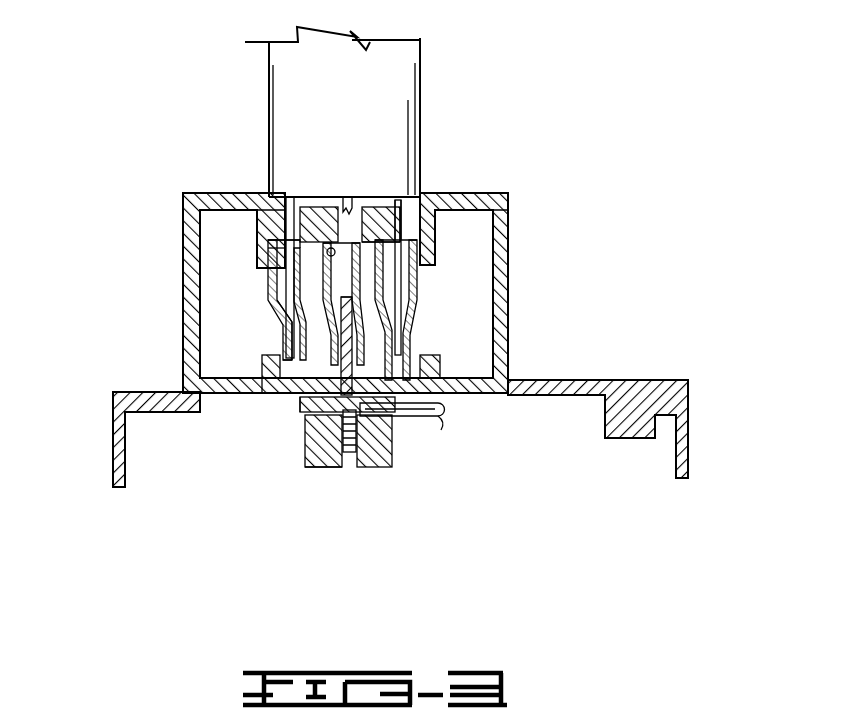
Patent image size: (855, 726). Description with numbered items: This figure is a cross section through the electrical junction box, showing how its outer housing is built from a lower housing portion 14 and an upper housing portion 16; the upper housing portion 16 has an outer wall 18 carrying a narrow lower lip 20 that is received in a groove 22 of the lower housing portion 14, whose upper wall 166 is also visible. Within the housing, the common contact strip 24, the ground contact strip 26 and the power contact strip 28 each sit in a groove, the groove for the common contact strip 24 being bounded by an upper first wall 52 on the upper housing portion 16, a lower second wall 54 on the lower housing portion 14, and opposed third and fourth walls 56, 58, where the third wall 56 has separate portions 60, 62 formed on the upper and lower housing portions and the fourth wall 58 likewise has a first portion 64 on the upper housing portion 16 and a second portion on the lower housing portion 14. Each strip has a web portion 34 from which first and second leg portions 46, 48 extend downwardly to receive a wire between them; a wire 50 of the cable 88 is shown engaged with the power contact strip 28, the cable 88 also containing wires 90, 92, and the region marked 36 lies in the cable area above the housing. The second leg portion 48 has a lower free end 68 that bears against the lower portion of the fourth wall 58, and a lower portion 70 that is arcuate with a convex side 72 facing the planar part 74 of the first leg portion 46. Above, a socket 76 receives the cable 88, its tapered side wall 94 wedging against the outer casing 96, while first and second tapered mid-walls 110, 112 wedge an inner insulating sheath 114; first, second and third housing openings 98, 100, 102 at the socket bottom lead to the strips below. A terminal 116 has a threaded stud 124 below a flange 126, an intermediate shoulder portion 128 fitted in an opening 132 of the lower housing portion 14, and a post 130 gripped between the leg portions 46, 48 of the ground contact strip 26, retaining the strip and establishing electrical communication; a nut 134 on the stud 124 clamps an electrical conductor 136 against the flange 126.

The lower housing portion 14 is at (637, 388).
The upper housing portion 16 is at (490, 195).
The outer wall 18 is at (500, 315).
The lower lip 20 is at (200, 392).
The groove 22 is at (522, 398).
The common contact strip 24 is at (290, 288).
The ground contact strip 26 is at (300, 258).
The power contact strip 28 is at (415, 290).
The web portion 34 is at (338, 197).
The shroud 36 is at (284, 117).
The first leg portion 46 is at (322, 262).
The second leg portion 48 is at (395, 325).
The wire 50 is at (430, 252).
The first wall 52 is at (300, 238).
The second wall 54 is at (283, 410).
The third wall 56 is at (298, 353).
The fourth wall 58 is at (303, 412).
The first portion of third wall 60 is at (282, 245).
The second portion of third wall 62 is at (262, 370).
The first portion of fourth wall 64 is at (282, 238).
The lower free end 68 is at (268, 393).
The lower portion 70 is at (280, 392).
The convex side 72 is at (292, 325).
The planar part 74 is at (292, 335).
The socket 76 is at (400, 192).
The cable 88 is at (430, 98).
The wire 90 is at (344, 197).
The wire 92 is at (272, 160).
The side wall 94 is at (398, 197).
The outer casing 96 is at (400, 67).
The first housing opening 98 is at (509, 206).
The second housing opening 100 is at (398, 182).
The third housing opening 102 is at (272, 198).
The first tapered mid-wall 110 is at (412, 178).
The second tapered mid-wall 112 is at (310, 197).
The inner insulating sheath 114 is at (403, 185).
The terminal 116 is at (340, 455).
The threaded stud 124 is at (390, 435).
The flange 126 is at (440, 410).
The intermediate shoulder portion 128 is at (428, 374).
The post 130 is at (380, 323).
The opening 132 is at (495, 356).
The nut 134 is at (352, 455).
The electrical conductor 136 is at (415, 418).
The upper wall 166 is at (553, 385).